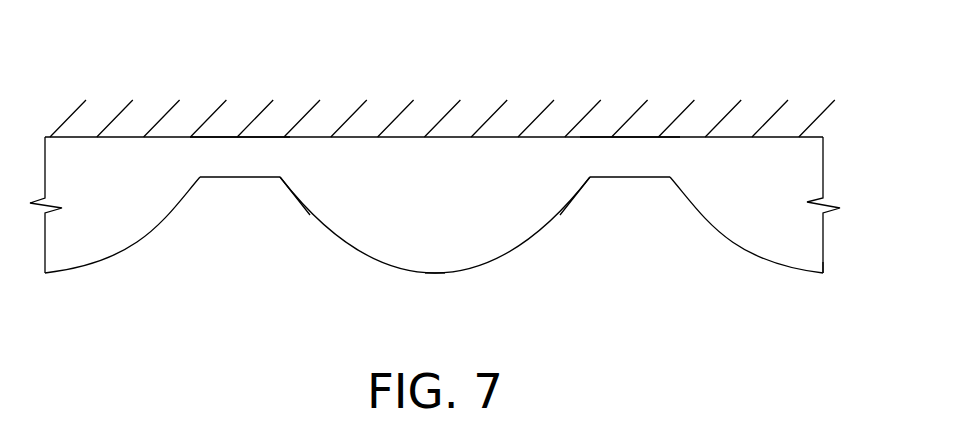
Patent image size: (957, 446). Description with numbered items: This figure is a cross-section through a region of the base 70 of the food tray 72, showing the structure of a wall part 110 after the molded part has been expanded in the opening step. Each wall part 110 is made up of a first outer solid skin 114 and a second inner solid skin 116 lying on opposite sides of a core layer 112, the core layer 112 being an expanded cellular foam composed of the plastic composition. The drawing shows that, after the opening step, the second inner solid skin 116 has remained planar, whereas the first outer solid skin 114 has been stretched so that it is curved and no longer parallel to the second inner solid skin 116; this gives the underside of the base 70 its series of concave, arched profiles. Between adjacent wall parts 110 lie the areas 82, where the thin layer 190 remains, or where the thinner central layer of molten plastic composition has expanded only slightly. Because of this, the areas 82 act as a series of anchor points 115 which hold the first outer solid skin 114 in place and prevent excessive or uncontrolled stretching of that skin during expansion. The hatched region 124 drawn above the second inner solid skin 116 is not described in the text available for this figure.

The base 70 is at (817, 168).
The food tray 72 is at (807, 282).
The areas 82 is at (232, 162).
The wall part 110 is at (150, 215).
The core layer 112 is at (346, 217).
The first outer solid skin 114 is at (403, 271).
The anchor points 115 is at (248, 177).
The second inner solid skin 116 is at (448, 137).
The hatched layer 124 is at (657, 112).
The thin layer 190 is at (242, 153).